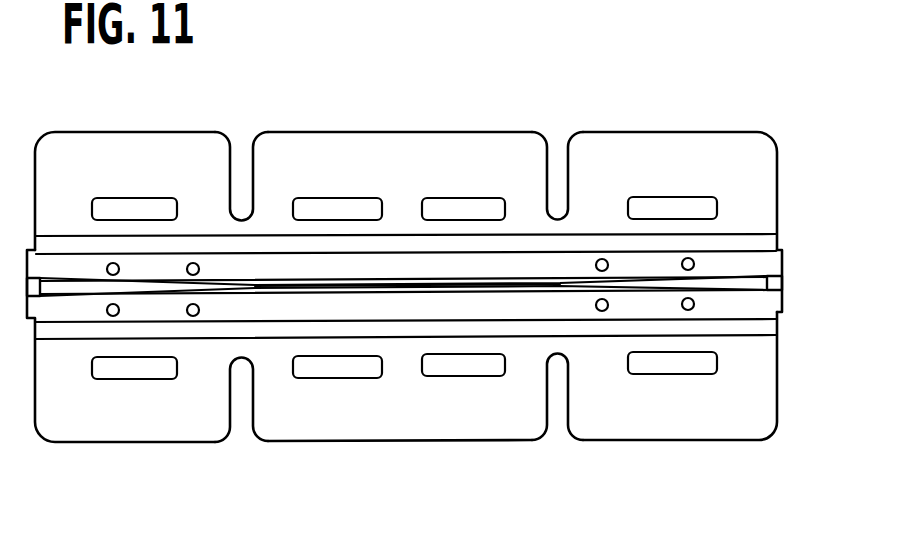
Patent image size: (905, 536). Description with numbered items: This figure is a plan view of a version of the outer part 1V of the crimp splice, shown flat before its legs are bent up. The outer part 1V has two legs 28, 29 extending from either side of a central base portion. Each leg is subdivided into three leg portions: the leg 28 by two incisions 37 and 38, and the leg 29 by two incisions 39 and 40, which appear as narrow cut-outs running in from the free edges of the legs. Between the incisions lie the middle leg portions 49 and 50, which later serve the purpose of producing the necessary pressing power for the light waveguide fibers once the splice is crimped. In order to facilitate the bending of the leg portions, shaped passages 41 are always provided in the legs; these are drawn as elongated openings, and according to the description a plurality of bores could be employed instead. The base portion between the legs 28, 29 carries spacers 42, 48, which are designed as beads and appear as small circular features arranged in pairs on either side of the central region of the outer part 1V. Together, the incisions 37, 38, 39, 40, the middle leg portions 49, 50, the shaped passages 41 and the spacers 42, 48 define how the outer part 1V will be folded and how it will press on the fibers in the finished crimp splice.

The outer part 1V is at (78, 411).
The leg 28 is at (666, 452).
The leg 29 is at (693, 116).
The incision 37 is at (243, 392).
The incision 38 is at (557, 400).
The incision 39 is at (243, 165).
The incision 40 is at (556, 158).
The shaped passage 41 is at (133, 372).
The spacer 42 is at (199, 272).
The spacer 48 is at (694, 266).
The middle leg portion 49 is at (417, 415).
The middle leg portion 50 is at (403, 150).